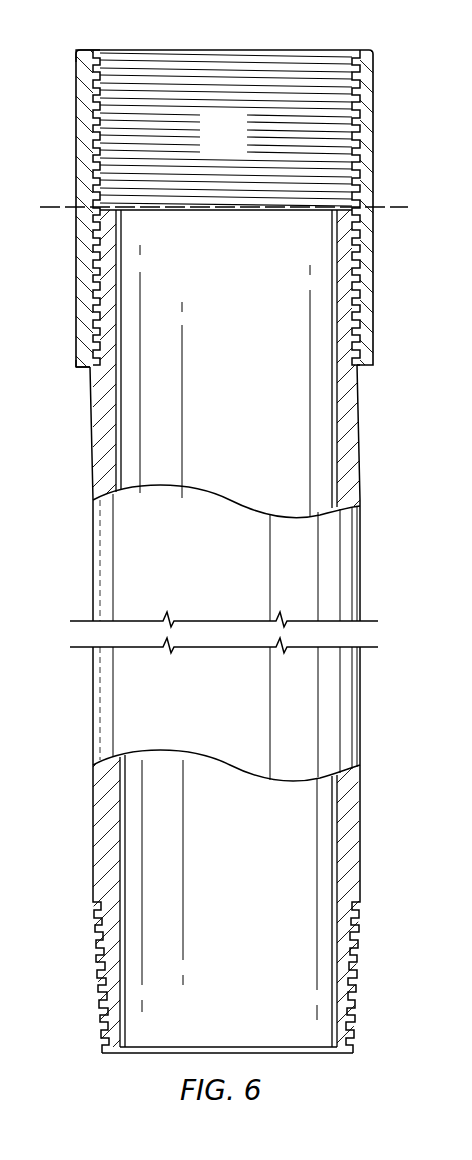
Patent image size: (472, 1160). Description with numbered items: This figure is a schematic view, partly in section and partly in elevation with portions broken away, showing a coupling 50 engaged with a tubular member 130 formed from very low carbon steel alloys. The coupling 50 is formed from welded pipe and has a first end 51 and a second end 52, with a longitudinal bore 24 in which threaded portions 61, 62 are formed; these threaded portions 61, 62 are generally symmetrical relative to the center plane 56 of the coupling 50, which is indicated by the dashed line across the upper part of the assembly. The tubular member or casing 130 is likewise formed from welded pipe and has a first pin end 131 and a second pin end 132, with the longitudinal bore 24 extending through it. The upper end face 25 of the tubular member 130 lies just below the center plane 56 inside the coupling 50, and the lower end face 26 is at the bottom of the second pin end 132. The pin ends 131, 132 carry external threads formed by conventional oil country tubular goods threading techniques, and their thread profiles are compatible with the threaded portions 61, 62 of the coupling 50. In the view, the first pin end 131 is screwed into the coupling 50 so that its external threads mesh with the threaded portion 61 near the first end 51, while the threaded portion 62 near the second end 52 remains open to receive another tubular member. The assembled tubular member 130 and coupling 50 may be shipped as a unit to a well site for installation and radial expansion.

The longitudinal bore 24 is at (239, 926).
The pipe end 25 is at (110, 210).
The pipe bottom end 26 is at (110, 1055).
The coupling 50 is at (380, 143).
The first end 51 is at (85, 368).
The second end 52 is at (79, 50).
The center plane 56 is at (397, 207).
The threaded portion 61 is at (97, 250).
The threaded portion 62 is at (353, 60).
The tubular member 130 is at (368, 745).
The first pin end 131 is at (357, 250).
The second pin end 132 is at (363, 979).